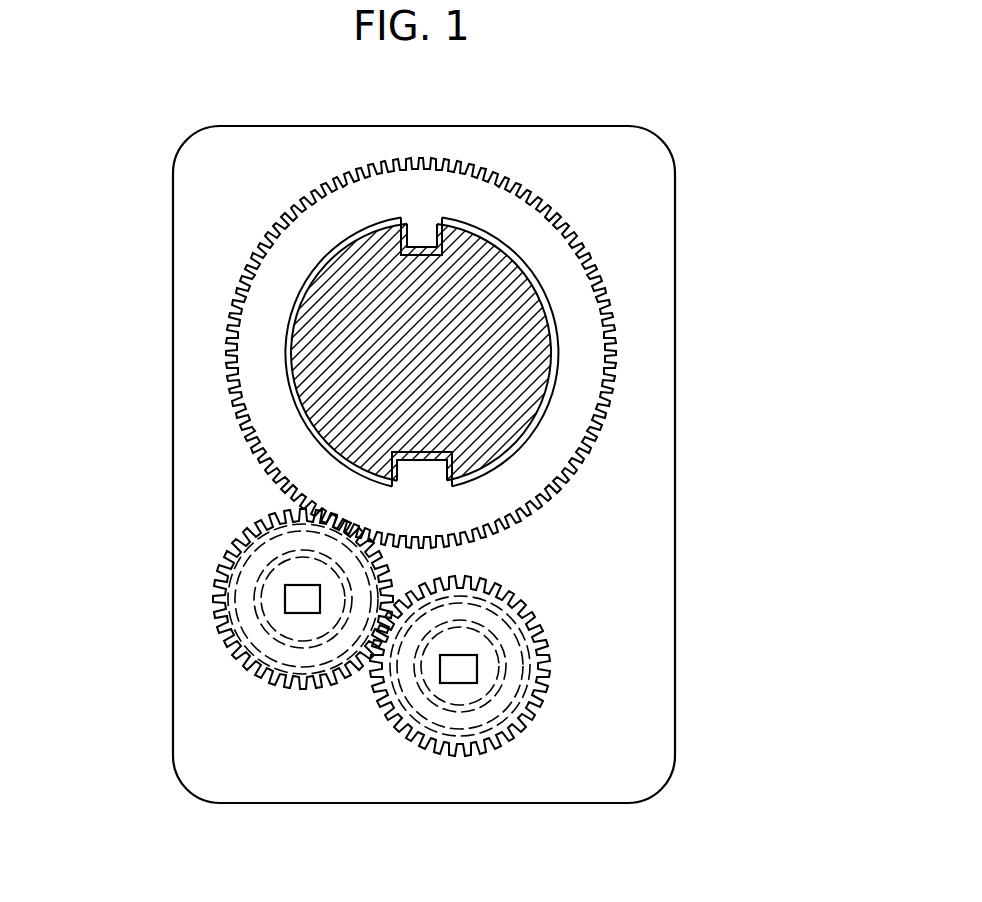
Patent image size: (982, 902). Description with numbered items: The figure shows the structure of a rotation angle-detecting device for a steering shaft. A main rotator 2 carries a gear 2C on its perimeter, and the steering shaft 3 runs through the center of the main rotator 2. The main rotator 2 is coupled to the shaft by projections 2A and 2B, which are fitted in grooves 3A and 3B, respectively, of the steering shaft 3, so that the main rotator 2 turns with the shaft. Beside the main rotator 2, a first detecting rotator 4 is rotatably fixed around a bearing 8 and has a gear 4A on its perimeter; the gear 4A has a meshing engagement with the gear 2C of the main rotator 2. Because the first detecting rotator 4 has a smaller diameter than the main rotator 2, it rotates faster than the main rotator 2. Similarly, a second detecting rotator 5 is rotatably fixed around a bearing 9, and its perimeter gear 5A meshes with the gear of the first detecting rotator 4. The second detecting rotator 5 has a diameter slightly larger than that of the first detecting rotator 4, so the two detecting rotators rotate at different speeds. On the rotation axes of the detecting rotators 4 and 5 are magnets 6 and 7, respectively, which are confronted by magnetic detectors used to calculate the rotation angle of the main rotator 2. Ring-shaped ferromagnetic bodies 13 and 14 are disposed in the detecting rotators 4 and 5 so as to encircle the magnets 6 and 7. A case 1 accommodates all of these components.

The case 1 is at (676, 175).
The main rotator 2 is at (578, 285).
The projection 2A is at (420, 233).
The projection 2B is at (433, 470).
The gear 2C is at (490, 170).
The steering shaft 3 is at (540, 372).
The groove 3A is at (385, 237).
The groove 3B is at (382, 462).
The first detecting rotator 4 is at (288, 633).
The gear 4A is at (293, 685).
The second detecting rotator 5 is at (487, 698).
The gear 5A is at (485, 753).
The magnet 6 is at (286, 602).
The magnet 7 is at (468, 677).
The bearing 8 is at (253, 592).
The bearing 9 is at (508, 667).
The ring-shaped ferromagnetic body 13 is at (237, 570).
The ring-shaped ferromagnetic body 14 is at (525, 638).